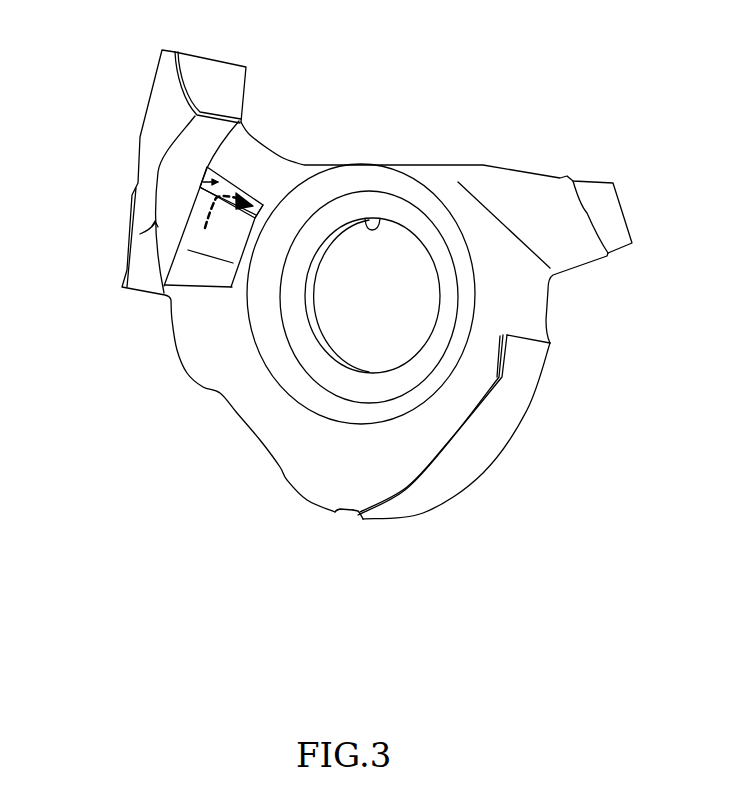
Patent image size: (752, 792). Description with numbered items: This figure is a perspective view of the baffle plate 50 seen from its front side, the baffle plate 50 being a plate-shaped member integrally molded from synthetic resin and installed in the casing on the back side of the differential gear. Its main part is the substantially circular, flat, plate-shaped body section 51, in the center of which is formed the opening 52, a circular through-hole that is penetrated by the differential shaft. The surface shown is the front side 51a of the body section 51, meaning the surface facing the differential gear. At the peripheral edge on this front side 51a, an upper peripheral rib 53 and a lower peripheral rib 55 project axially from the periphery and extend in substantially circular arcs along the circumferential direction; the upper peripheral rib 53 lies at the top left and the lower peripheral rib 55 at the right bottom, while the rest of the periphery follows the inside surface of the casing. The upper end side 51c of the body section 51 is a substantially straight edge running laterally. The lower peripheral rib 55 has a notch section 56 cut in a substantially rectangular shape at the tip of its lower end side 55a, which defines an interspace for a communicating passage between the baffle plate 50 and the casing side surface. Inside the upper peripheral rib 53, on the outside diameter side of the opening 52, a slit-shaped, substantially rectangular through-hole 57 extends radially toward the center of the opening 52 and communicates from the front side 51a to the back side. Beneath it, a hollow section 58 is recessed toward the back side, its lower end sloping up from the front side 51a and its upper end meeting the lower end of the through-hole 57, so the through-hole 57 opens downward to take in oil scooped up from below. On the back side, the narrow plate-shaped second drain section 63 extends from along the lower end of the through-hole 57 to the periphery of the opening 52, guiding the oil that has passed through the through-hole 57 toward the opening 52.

The baffle plate 50 is at (347, 313).
The body section 51 is at (395, 313).
The front side 51a is at (262, 417).
The upper end side 51c is at (293, 163).
The opening 52 is at (372, 228).
The upper peripheral rib 53 is at (144, 204).
The lower peripheral rib 55 is at (487, 461).
The lower end side 55a is at (365, 520).
The notch section 56 is at (337, 513).
The through-hole 57 is at (205, 182).
The hollow section 58 is at (205, 242).
The second drain section 63 is at (201, 190).